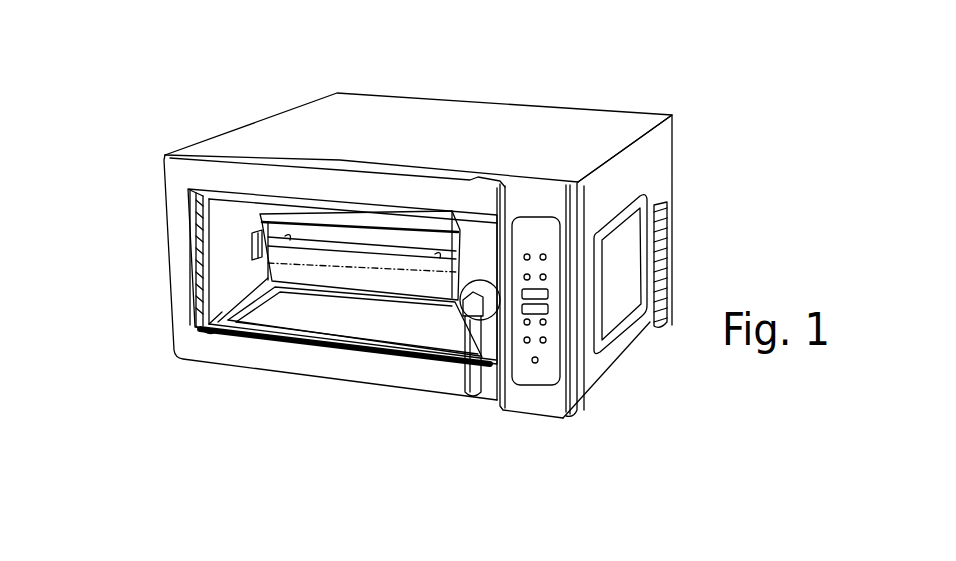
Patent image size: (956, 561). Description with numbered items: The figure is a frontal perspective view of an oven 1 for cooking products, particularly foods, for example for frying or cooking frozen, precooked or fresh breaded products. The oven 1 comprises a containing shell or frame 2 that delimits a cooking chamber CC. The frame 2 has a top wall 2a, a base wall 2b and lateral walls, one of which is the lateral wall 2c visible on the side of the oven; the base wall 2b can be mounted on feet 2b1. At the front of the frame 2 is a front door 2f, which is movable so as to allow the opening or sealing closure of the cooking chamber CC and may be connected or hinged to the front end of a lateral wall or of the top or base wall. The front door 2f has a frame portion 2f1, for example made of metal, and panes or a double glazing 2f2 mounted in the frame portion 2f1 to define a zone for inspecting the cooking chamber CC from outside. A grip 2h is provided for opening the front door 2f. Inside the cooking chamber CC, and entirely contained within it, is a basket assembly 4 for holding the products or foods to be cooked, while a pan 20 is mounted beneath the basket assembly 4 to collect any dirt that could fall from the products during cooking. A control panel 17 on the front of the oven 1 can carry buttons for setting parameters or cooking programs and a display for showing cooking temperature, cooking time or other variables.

The oven 1 is at (224, 115).
The containing shell or frame 2 is at (673, 143).
The top wall 2a is at (368, 108).
The base wall 2b is at (645, 332).
The feet 2b1 is at (650, 324).
The lateral wall 2c is at (630, 335).
The front door 2f is at (204, 349).
The frame portion 2f1 is at (175, 233).
The panes or double glazing 2f2 is at (233, 208).
The grip 2h is at (477, 400).
The basket assembly 4 is at (372, 272).
The control panel 17 is at (548, 358).
The pan 20 is at (307, 313).
The cooking chamber CC is at (411, 283).